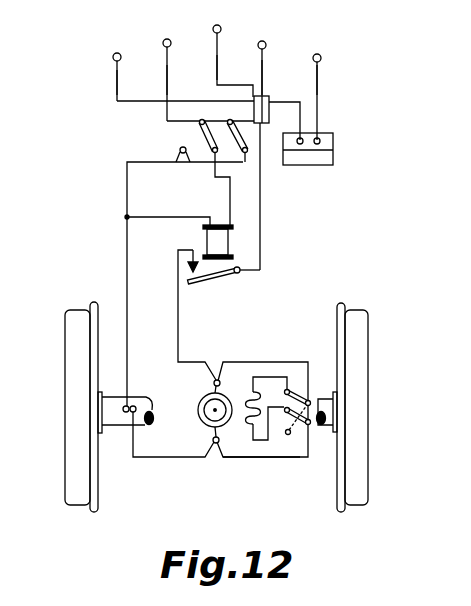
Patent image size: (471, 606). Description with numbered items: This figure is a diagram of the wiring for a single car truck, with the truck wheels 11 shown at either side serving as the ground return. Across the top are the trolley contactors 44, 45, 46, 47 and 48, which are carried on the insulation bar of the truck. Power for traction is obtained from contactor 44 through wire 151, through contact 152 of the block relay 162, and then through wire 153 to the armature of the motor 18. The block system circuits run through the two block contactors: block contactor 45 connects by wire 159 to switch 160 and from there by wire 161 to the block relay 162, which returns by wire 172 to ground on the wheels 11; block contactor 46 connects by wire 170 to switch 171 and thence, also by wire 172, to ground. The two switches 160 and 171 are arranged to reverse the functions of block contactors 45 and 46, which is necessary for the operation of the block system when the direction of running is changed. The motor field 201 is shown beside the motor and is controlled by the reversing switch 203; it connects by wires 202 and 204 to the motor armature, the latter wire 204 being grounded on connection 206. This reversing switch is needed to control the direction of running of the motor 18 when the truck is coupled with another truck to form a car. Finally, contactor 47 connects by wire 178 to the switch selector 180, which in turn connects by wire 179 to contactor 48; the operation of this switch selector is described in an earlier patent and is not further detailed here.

The wheels 11 is at (66, 348).
The motor 18 is at (198, 412).
The trolley contactor 44 is at (230, 53).
The block contactor 45 is at (161, 72).
The block contactor 46 is at (268, 72).
The contactor 47 is at (106, 68).
The contactor 48 is at (316, 88).
The wire 151 is at (219, 68).
The contact 152 is at (193, 283).
The wire 153 is at (178, 346).
The wire 159 is at (168, 79).
The switch 160 is at (197, 139).
The wire 161 is at (228, 198).
The block relay 162 is at (233, 241).
The wire 170 is at (264, 75).
The switch 171 is at (230, 133).
The wire 172 is at (204, 162).
The wire 178 is at (119, 80).
The wire 179 is at (318, 75).
The switch selector 180 is at (288, 163).
The motor field 201 is at (250, 395).
The wire 202 is at (261, 364).
The reversing switch 203 is at (320, 360).
The wire 204 is at (231, 459).
The connection 206 is at (173, 436).